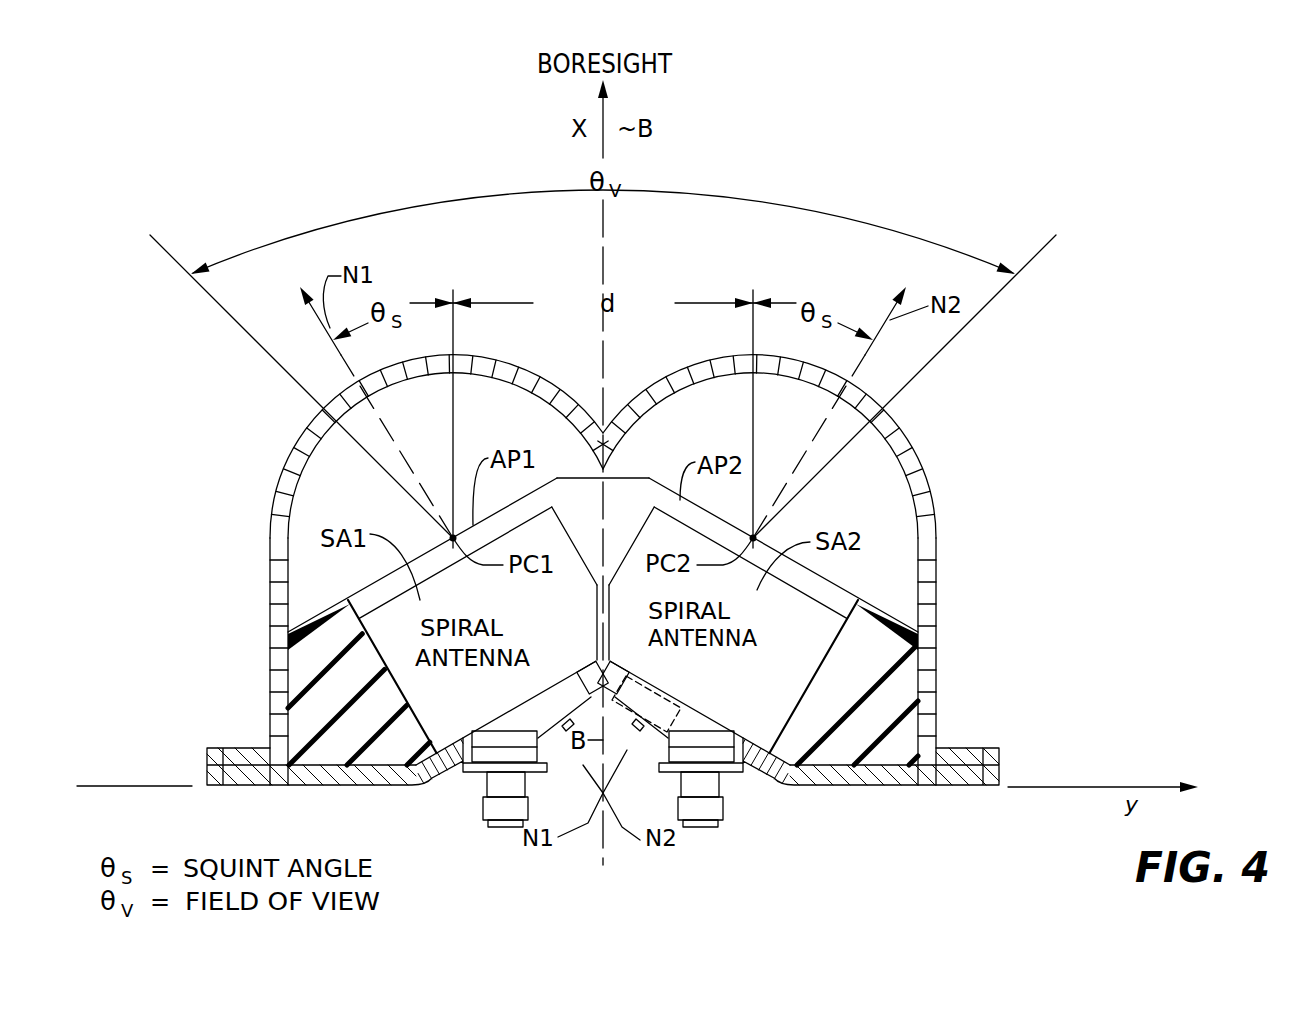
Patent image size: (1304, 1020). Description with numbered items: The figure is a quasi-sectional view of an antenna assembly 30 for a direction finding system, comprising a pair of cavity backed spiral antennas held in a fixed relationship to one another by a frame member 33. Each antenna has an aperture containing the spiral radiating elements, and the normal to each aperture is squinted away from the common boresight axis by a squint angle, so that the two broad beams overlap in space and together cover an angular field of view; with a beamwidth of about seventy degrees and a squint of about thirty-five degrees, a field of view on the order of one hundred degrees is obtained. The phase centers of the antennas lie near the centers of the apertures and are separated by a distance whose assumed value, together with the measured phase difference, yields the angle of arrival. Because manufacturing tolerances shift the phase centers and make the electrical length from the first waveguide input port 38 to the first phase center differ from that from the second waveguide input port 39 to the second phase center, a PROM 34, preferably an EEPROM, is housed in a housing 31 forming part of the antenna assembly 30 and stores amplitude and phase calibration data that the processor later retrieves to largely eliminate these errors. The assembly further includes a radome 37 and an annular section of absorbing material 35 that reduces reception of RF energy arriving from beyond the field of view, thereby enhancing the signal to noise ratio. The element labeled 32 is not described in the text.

The antenna assembly 30 is at (1062, 380).
The housing 31 is at (705, 723).
The switch module 32 is at (638, 731).
The frame member 33 is at (623, 487).
The PROM 34 is at (676, 697).
The annular section of absorbing material 35 is at (328, 676).
The radome 37 is at (907, 455).
The waveguide input port 38 is at (493, 808).
The waveguide input port 39 is at (720, 808).